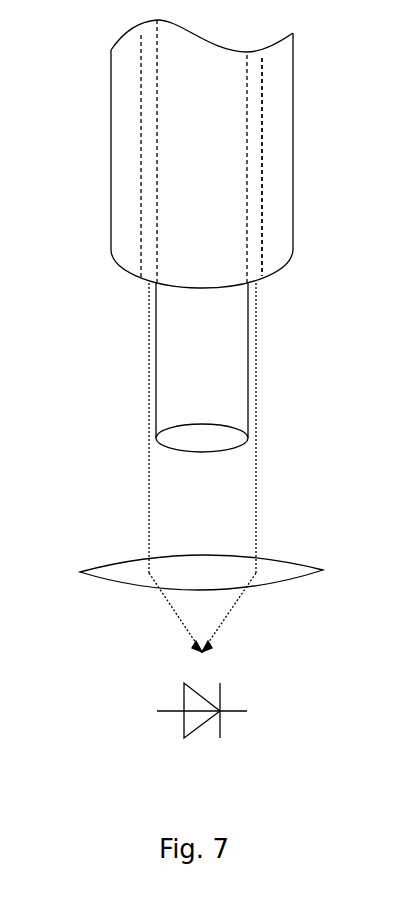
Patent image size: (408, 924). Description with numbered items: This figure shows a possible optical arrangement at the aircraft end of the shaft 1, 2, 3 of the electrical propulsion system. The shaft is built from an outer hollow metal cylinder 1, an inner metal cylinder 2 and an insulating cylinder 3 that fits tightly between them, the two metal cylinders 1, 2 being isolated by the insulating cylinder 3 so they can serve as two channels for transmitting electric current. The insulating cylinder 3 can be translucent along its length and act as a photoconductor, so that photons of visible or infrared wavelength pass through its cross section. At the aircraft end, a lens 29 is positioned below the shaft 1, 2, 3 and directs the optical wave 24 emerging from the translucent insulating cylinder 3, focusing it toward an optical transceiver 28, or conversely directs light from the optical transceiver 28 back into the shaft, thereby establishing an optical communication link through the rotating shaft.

The outer metal cylinder 1 is at (128, 118).
The inner metal cylinder 2 is at (170, 303).
The insulating cylinder 3 is at (262, 238).
The optical wave 24 is at (143, 455).
The lens 29 is at (125, 570).
The optical transceiver 28 is at (198, 719).